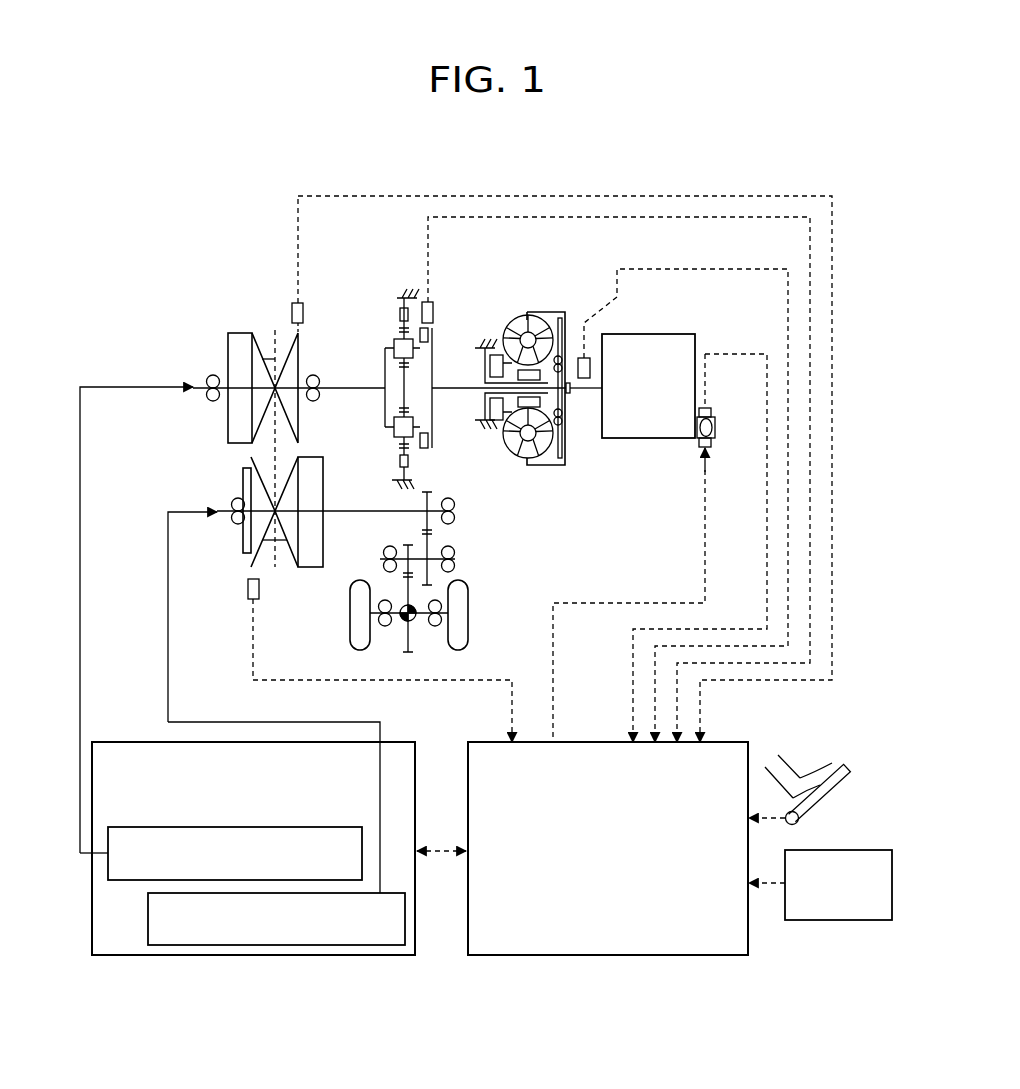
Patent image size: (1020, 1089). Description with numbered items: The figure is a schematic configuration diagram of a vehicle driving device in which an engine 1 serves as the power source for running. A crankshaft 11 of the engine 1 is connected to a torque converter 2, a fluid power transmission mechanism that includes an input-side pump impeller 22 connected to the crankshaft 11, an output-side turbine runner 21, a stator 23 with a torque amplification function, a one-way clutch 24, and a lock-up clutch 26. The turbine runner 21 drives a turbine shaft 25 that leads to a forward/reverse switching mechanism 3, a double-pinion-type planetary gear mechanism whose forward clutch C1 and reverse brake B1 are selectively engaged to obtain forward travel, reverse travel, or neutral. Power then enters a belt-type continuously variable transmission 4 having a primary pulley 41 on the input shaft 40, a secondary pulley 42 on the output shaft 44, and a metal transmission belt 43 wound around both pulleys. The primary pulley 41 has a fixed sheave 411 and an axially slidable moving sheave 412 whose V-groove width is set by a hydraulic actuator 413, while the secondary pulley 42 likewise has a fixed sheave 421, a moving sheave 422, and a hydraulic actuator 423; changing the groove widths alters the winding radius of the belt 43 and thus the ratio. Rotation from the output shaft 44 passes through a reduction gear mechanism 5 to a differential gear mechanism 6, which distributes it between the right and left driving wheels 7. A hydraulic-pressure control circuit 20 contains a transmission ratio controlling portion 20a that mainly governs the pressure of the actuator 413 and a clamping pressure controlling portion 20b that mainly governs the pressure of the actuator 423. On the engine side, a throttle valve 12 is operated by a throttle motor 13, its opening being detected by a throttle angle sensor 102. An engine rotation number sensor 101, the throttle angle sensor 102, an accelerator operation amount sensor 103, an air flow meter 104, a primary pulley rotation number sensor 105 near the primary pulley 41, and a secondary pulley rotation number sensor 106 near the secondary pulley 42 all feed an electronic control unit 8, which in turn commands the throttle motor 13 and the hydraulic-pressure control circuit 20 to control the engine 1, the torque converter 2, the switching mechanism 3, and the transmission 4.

The engine 1 is at (690, 326).
The torque converter 2 is at (527, 297).
The forward/reverse switching mechanism 3 is at (405, 276).
The continuously variable transmission 4 is at (262, 303).
The reduction gear mechanism 5 is at (440, 545).
The differential gear mechanism 6 is at (403, 625).
The driving wheels 7 is at (352, 613).
The electronic control unit (ECU) 8 is at (593, 742).
The crankshaft 11 is at (586, 392).
The throttle valve 12 is at (716, 428).
The throttle motor 13 is at (710, 456).
The hydraulic-pressure control circuit 20 is at (398, 742).
The transmission ratio controlling portion 20a is at (352, 827).
The clamping pressure controlling portion 20b is at (148, 925).
The turbine runner 21 is at (518, 460).
The pump impeller 22 is at (540, 464).
The stator 23 is at (506, 445).
The one-way clutch 24 is at (490, 368).
The turbine shaft 25 is at (448, 392).
The lock-up clutch 26 is at (566, 453).
The input shaft 40 is at (336, 392).
The primary pulley 41 is at (218, 338).
The fixed sheave 411 is at (300, 362).
The moving sheave 412 is at (252, 410).
The hydraulic actuator 413 is at (228, 358).
The secondary pulley 42 is at (240, 556).
The fixed sheave 421 is at (262, 540).
The moving sheave 422 is at (291, 548).
The hydraulic actuator 423 is at (323, 480).
The transmission belt 43 is at (276, 347).
The output shaft 44 is at (356, 514).
The engine rotation number sensor 101 is at (584, 354).
The throttle angle sensor 102 is at (712, 413).
The accelerator operation amount sensor 103 is at (800, 821).
The air flow meter 104 is at (848, 921).
The primary pulley rotation number sensor 105 is at (303, 312).
The secondary pulley rotation number sensor 106 is at (248, 592).
The reverse brake B1 is at (401, 312).
The forward clutch C1 is at (430, 336).